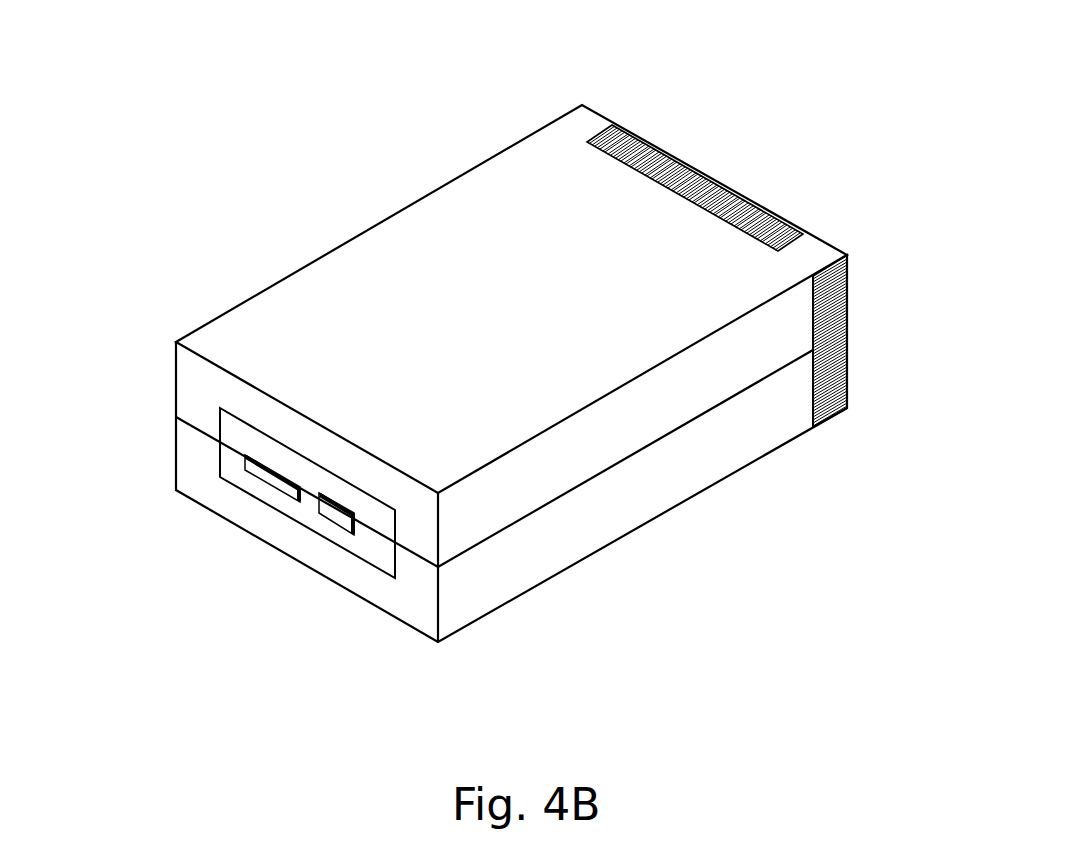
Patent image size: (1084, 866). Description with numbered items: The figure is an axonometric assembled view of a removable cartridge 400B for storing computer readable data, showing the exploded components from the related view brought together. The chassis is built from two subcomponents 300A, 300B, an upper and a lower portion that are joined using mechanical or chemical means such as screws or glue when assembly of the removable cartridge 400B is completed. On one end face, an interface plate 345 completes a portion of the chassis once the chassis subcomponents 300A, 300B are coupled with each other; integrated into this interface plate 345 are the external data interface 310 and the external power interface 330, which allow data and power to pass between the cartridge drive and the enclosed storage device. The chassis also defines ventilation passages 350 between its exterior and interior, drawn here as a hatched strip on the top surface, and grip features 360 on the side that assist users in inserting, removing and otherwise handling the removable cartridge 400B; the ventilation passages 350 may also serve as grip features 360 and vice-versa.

The removable cartridge 400B is at (777, 83).
The chassis subcomponent 300A is at (307, 265).
The chassis subcomponent 300B is at (690, 500).
The interface plate 345 is at (218, 430).
The external data interface 310 is at (267, 487).
The external power interface 330 is at (337, 527).
The ventilation passages 350 is at (763, 190).
The grip features 360 is at (858, 305).